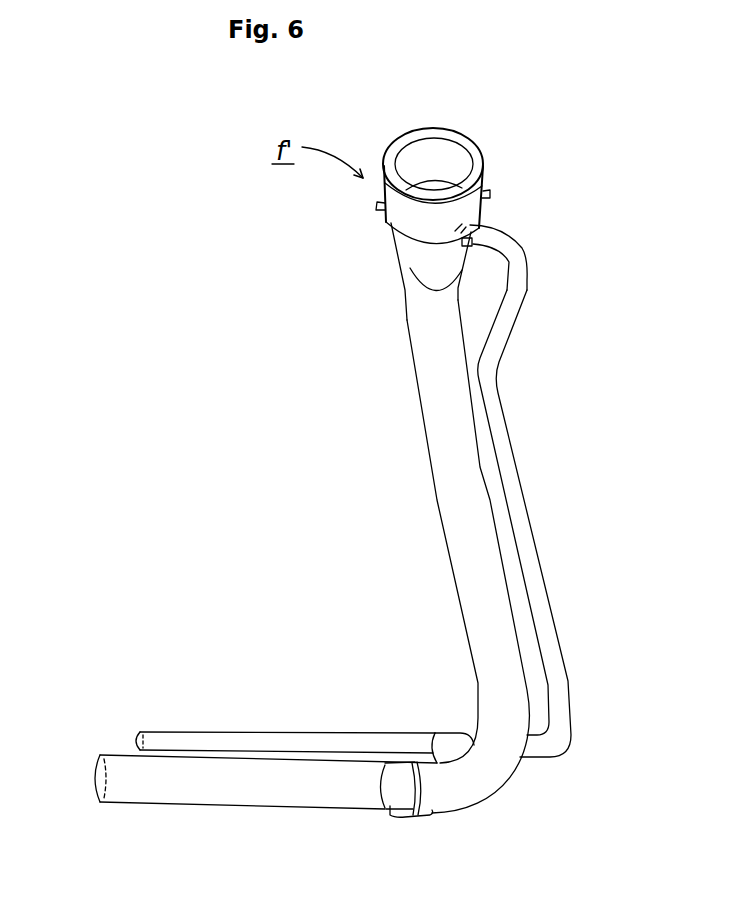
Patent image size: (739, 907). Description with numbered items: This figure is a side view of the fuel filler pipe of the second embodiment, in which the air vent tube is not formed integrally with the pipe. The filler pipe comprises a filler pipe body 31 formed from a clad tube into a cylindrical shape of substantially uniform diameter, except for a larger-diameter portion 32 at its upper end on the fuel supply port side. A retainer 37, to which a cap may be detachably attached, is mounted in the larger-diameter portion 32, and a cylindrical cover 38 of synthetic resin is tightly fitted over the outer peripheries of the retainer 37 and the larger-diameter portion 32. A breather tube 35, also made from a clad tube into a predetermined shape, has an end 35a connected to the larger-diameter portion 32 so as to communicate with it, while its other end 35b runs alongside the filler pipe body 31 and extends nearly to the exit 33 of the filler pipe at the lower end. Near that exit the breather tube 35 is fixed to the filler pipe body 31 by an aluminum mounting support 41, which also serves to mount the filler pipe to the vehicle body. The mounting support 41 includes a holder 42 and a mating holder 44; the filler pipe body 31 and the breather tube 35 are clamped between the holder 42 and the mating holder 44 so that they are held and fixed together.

The filler pipe body 31 is at (443, 467).
The larger-diameter portion 32 is at (417, 250).
The exit 33 is at (93, 780).
The breather tube 35 is at (512, 485).
The end of breather tube 35a is at (495, 240).
The other end of breather tube 35b is at (165, 738).
The retainer 37 is at (445, 150).
The cylindrical cover 38 is at (398, 222).
The mounting support 41 is at (381, 783).
The holder 42 is at (397, 772).
The mating holder 44 is at (415, 815).